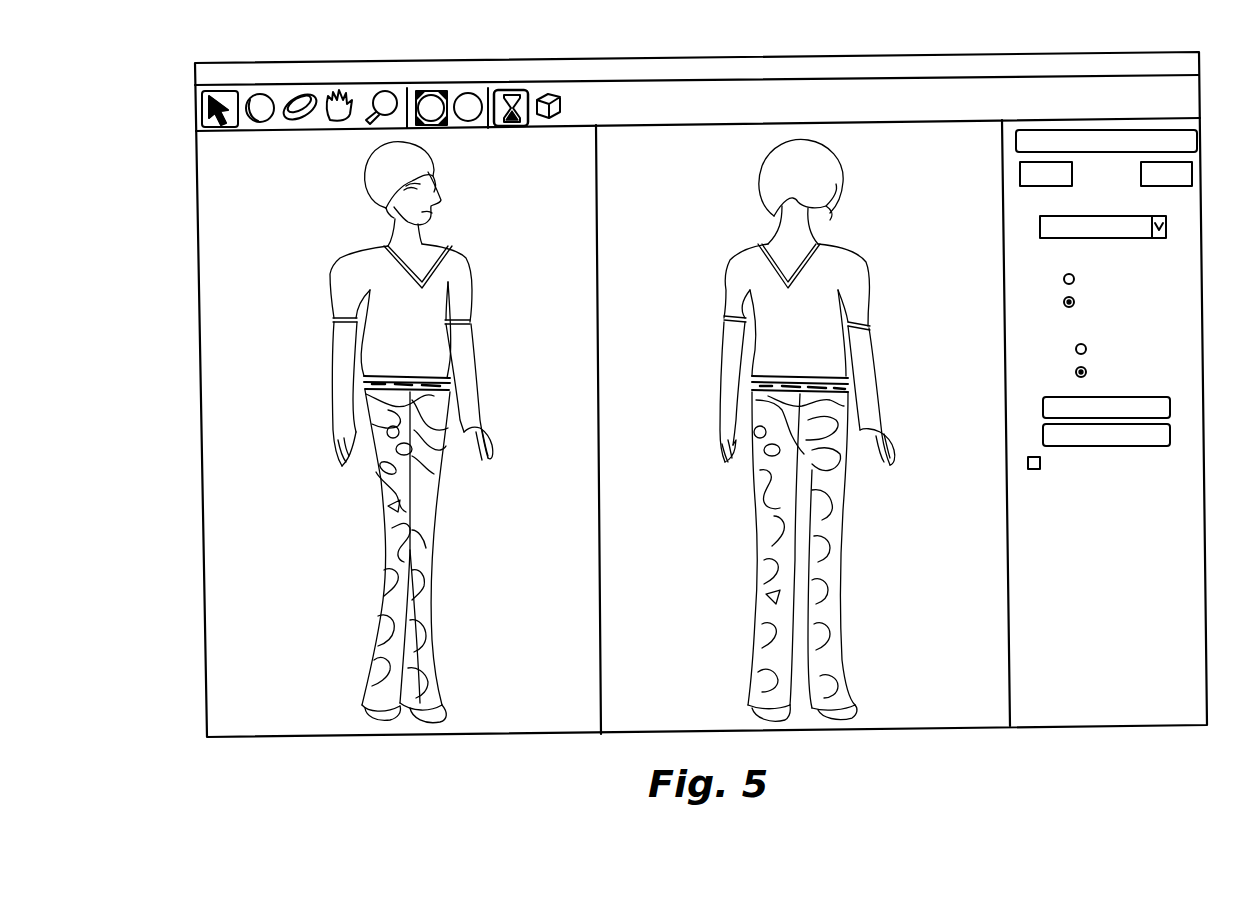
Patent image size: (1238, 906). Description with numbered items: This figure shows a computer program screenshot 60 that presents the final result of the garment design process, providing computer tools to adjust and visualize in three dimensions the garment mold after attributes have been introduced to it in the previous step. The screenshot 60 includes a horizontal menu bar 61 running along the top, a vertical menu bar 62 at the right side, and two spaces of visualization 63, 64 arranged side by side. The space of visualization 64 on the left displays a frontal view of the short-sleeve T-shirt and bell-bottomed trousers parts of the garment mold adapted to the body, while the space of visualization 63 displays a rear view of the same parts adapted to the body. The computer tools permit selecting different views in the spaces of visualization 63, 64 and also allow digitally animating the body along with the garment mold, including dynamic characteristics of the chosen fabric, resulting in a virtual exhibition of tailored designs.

The screenshot 60 is at (356, 755).
The horizontal menu bar 61 is at (190, 121).
The vertical menu bar 62 is at (1096, 718).
The space of visualization 63 is at (978, 622).
The space of visualization 64 is at (228, 613).